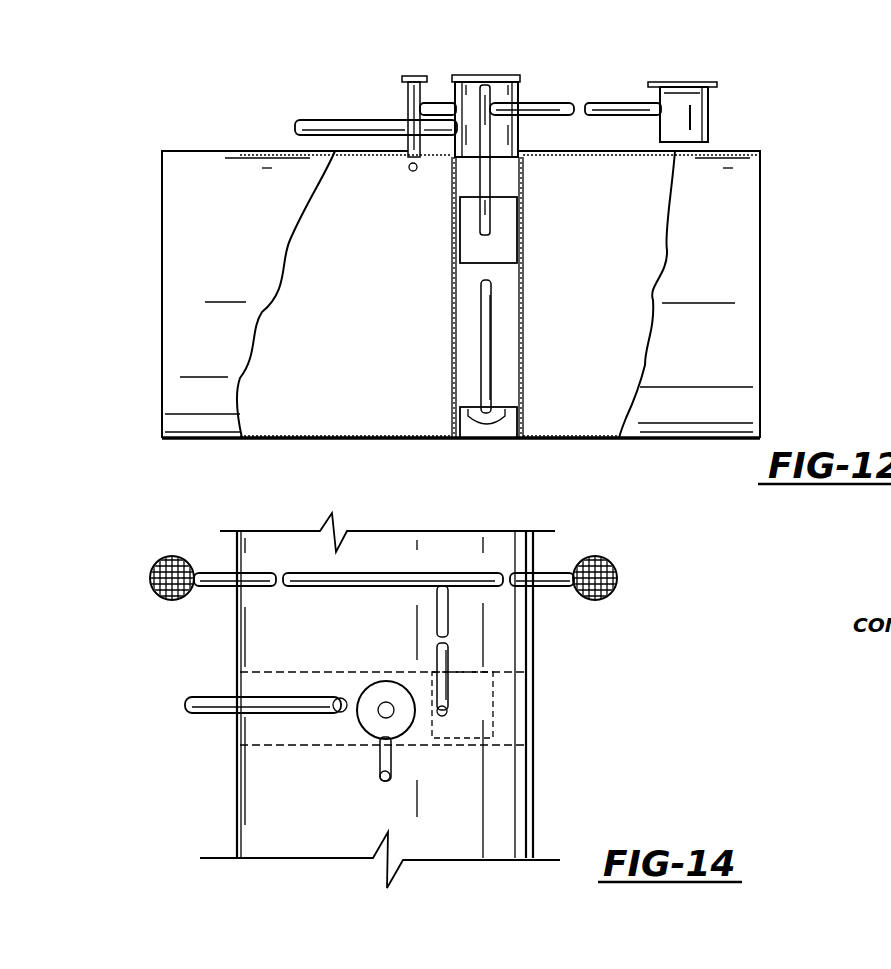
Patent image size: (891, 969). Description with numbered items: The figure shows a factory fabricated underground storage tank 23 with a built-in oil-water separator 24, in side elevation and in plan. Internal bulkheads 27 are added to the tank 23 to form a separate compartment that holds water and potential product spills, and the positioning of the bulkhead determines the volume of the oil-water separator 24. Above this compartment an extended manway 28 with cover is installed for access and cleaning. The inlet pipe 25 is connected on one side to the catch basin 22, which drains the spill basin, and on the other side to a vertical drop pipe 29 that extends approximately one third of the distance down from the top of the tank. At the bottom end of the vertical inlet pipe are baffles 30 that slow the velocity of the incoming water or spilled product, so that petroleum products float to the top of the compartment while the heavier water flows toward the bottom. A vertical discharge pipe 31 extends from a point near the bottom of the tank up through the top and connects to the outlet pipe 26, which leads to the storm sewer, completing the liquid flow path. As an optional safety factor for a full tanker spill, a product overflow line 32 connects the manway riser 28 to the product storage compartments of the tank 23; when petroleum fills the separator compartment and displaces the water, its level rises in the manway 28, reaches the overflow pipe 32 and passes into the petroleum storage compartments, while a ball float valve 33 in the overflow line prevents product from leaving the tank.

In FIG. 12, the catch basin 22 is at (712, 82).
In FIG. 14, the catch basin 22 is at (616, 566).
In FIG. 12, the tank 23 is at (214, 403).
In FIG. 14, the tank 23 is at (302, 842).
In FIG. 14, the oil-water separator 24 is at (520, 678).
In FIG. 12, the inlet pipe 25 is at (553, 103).
In FIG. 14, the inlet pipe 25 is at (450, 663).
In FIG. 12, the outlet pipe 26 is at (378, 121).
In FIG. 14, the outlet pipe 26 is at (198, 697).
In FIG. 12, the internal bulkheads 27 is at (452, 370).
In FIG. 12, the extended manway 28 is at (519, 83).
In FIG. 12, the vertical drop pipe 29 is at (512, 192).
In FIG. 14, the vertical drop pipe 29 is at (447, 713).
In FIG. 12, the baffles 30 is at (508, 226).
In FIG. 12, the vertical discharge pipe 31 is at (490, 306).
In FIG. 14, the vertical discharge pipe 31 is at (338, 696).
In FIG. 12, the product overflow line 32 is at (436, 104).
In FIG. 14, the product overflow line 32 is at (391, 748).
In FIG. 12, the ball float valve 33 is at (410, 171).